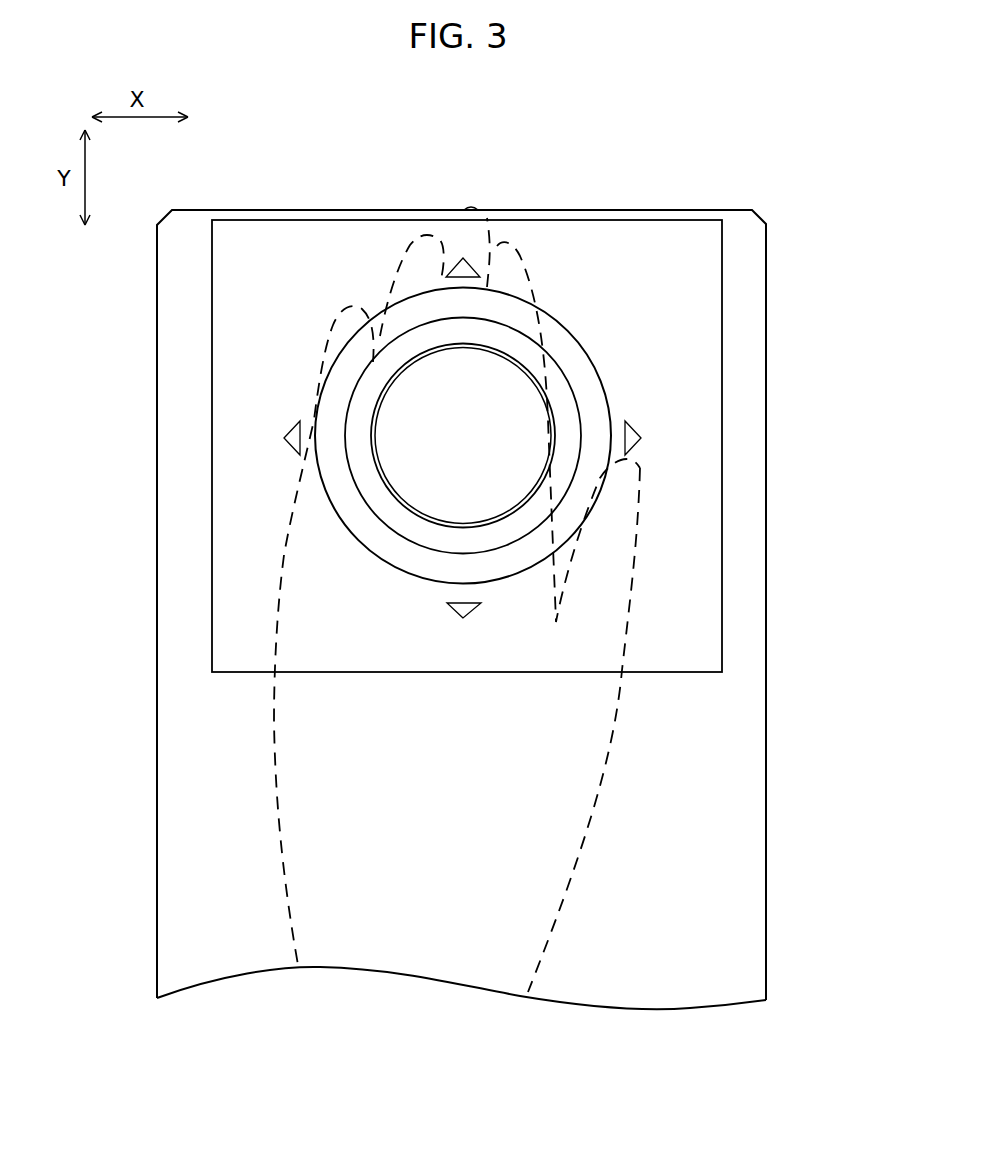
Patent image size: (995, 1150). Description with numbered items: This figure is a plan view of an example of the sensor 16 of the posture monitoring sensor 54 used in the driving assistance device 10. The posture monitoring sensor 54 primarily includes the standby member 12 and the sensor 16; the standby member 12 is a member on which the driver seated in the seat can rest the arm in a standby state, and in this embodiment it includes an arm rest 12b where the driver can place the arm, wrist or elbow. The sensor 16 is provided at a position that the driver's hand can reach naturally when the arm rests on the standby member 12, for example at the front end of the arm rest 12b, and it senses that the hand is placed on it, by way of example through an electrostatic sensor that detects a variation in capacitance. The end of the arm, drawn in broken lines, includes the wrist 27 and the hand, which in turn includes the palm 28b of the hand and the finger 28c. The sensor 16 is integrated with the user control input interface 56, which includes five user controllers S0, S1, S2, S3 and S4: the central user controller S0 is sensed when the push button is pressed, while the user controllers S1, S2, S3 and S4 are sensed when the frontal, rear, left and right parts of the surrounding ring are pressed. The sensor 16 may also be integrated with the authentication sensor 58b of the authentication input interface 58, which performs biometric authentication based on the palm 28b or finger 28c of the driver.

The driving assistance device 10 is at (257, 129).
The standby member 12 is at (127, 723).
The arm rest 12b is at (200, 807).
The sensor 16 is at (697, 371).
The wrist 27 is at (377, 917).
The palm of the hand 28b is at (377, 627).
The finger 28c is at (320, 372).
The posture monitoring sensor 54 is at (697, 314).
The user control input interface 56 is at (480, 178).
The authentication input interface 58 is at (573, 178).
The authentication sensor 58b is at (697, 421).
The user controller S0 is at (463, 436).
The user controller S1 is at (463, 252).
The user controller S2 is at (464, 632).
The user controller S3 is at (273, 438).
The user controller S4 is at (654, 438).